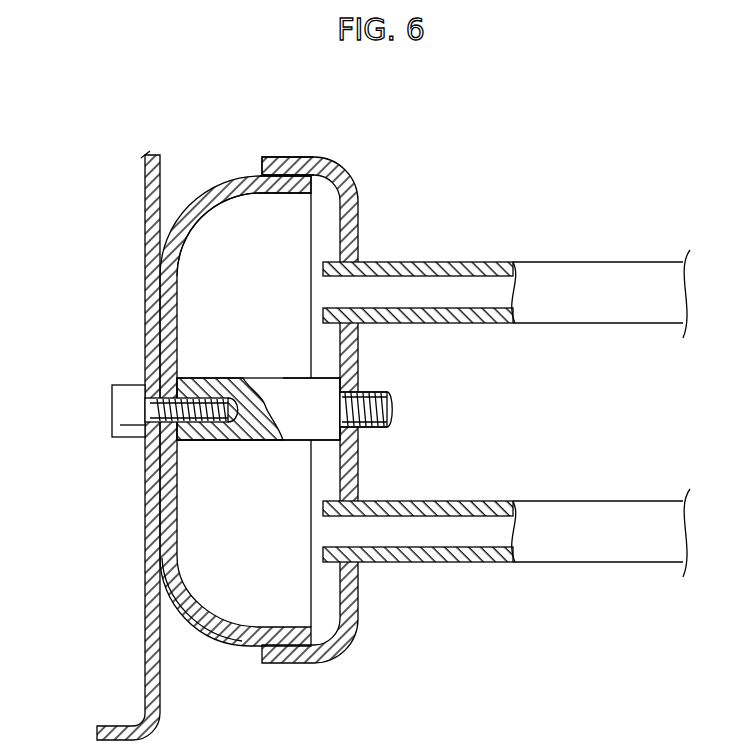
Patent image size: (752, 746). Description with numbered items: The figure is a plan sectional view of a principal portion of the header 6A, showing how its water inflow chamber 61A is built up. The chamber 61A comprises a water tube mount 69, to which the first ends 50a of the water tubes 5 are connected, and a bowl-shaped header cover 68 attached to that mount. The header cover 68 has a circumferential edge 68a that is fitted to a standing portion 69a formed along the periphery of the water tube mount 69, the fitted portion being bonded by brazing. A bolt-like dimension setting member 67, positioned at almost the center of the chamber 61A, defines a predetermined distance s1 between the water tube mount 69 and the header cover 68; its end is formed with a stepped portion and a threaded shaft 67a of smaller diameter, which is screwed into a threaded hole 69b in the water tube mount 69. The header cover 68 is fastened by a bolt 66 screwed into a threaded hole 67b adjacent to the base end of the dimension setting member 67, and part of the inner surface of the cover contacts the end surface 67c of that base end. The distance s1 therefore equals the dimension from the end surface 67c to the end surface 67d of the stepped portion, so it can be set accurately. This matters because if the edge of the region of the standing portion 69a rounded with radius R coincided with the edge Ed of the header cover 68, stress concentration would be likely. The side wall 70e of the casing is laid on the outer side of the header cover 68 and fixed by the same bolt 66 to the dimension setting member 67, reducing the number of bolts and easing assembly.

The water tube 5 is at (622, 275).
The header 6A is at (245, 389).
The first end of water tube 50a is at (347, 258).
The water inflow chamber 61A is at (223, 227).
The bolt 66 is at (113, 407).
The dimension setting member 67 is at (280, 378).
The threaded shaft 67a is at (368, 407).
The threaded hole 67b is at (212, 442).
The end surface of base end 67c is at (160, 440).
The end surface of stepped portion 67d is at (353, 390).
The header cover 68 is at (182, 208).
The circumferential edge 68a is at (292, 188).
The water tube mount 69 is at (353, 171).
The standing portion 69a is at (290, 167).
The threaded hole 69b is at (375, 428).
The side wall 70e is at (152, 653).
The edge of header cover Ed is at (312, 172).
The radius R is at (328, 183).
The distance s1 is at (330, 483).